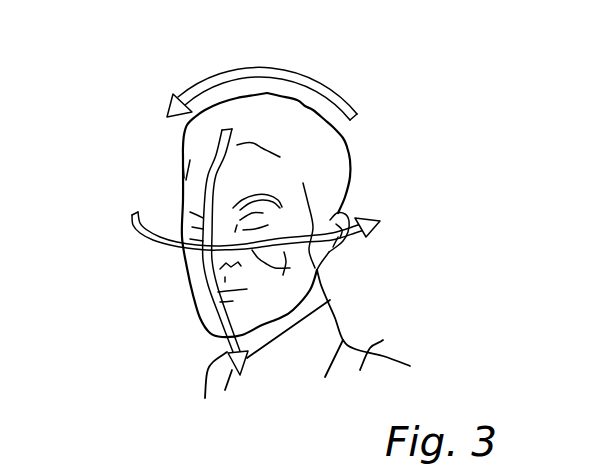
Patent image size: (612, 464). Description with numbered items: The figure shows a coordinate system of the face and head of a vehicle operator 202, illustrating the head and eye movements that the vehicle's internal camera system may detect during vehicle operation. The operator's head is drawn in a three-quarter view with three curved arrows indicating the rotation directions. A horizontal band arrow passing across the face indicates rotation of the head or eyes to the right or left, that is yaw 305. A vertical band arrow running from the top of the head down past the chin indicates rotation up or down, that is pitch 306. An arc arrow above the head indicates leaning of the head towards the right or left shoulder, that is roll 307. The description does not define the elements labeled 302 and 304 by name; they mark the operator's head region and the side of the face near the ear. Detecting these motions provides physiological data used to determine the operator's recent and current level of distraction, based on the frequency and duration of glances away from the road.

The vehicle operator 202 is at (383, 340).
The head 302 is at (152, 276).
The ear 304 is at (318, 268).
The yaw 305 is at (136, 229).
The pitch 306 is at (212, 178).
The roll 307 is at (265, 73).